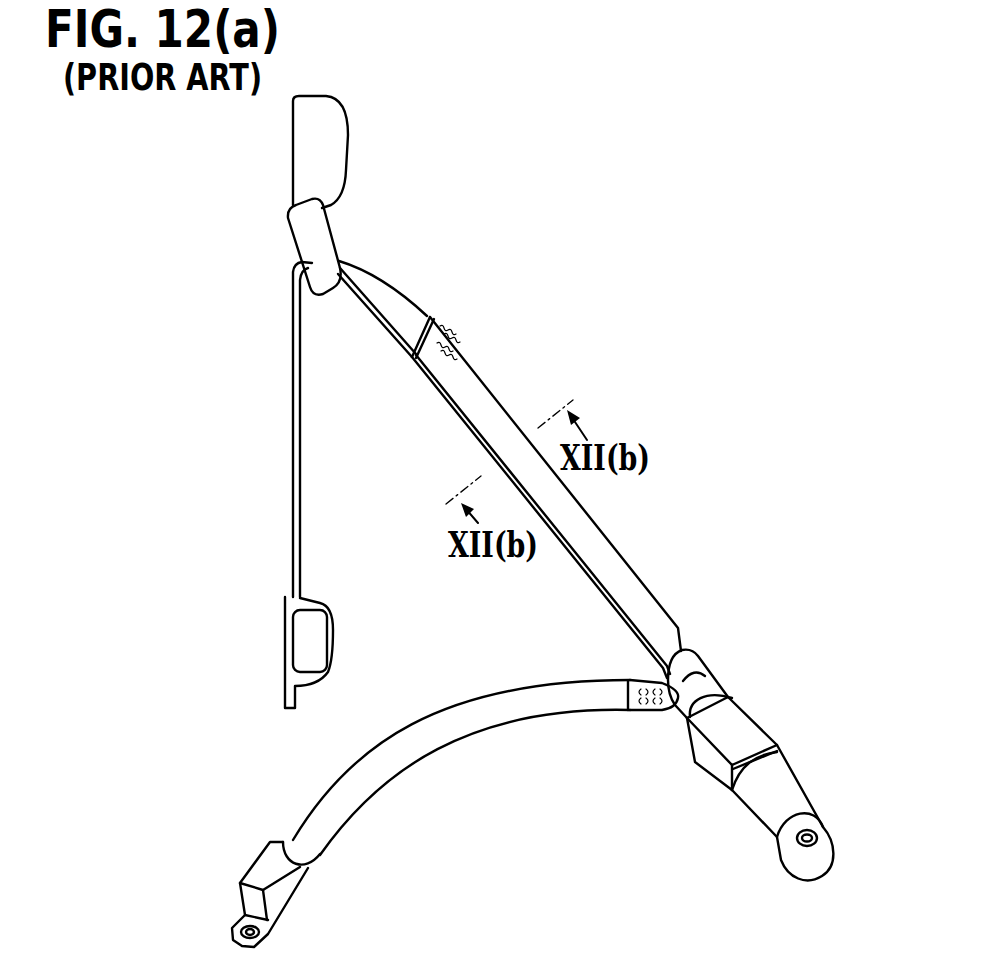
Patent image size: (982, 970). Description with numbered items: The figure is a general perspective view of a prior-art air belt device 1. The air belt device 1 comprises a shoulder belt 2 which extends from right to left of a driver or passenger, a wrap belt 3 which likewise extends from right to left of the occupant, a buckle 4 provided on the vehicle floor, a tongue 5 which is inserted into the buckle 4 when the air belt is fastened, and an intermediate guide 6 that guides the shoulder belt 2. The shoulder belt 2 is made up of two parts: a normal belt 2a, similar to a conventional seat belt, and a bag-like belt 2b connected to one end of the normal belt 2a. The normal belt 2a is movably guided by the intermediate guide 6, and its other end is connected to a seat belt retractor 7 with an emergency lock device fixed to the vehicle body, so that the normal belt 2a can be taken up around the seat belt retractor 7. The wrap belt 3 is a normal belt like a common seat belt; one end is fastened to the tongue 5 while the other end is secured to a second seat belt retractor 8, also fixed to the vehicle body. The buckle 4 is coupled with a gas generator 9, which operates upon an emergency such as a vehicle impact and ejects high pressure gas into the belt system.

The air belt device 1 is at (630, 361).
The shoulder belt 2 is at (509, 442).
The normal belt 2a is at (402, 310).
The bag-like belt 2b is at (463, 372).
The wrap belt 3 is at (435, 742).
The buckle 4 is at (743, 723).
The tongue 5 is at (683, 667).
The intermediate guide 6 is at (335, 158).
The seat belt retractor 7 is at (306, 632).
The seat belt retractor 8 is at (290, 890).
The gas generator 9 is at (783, 793).